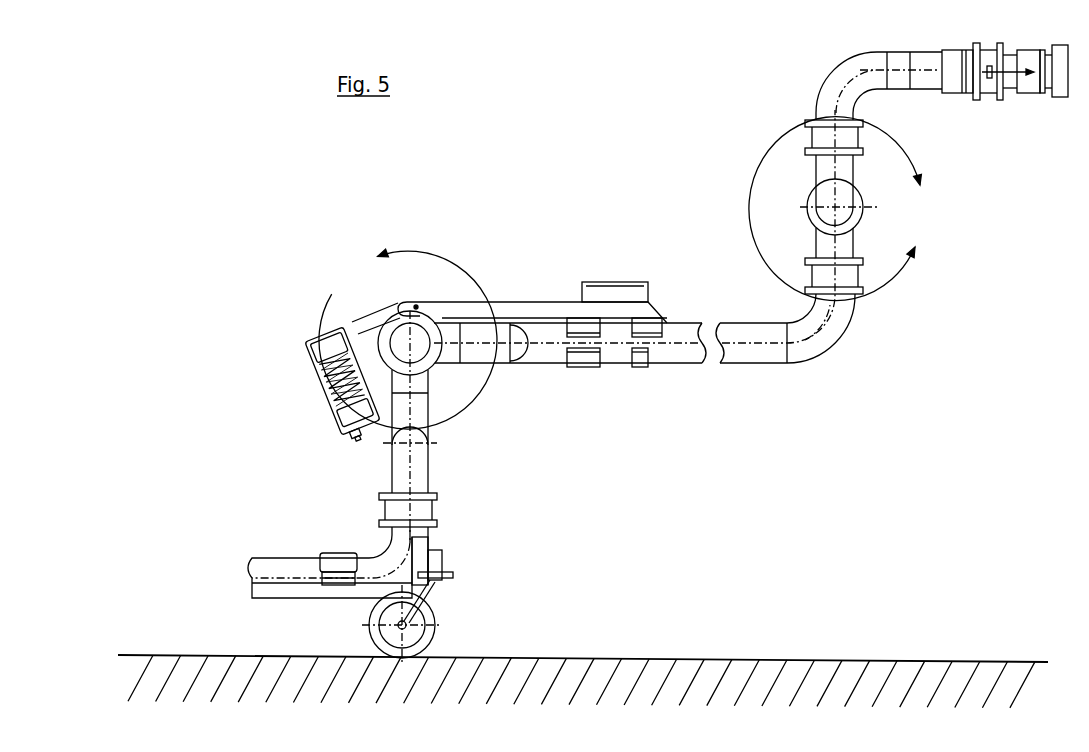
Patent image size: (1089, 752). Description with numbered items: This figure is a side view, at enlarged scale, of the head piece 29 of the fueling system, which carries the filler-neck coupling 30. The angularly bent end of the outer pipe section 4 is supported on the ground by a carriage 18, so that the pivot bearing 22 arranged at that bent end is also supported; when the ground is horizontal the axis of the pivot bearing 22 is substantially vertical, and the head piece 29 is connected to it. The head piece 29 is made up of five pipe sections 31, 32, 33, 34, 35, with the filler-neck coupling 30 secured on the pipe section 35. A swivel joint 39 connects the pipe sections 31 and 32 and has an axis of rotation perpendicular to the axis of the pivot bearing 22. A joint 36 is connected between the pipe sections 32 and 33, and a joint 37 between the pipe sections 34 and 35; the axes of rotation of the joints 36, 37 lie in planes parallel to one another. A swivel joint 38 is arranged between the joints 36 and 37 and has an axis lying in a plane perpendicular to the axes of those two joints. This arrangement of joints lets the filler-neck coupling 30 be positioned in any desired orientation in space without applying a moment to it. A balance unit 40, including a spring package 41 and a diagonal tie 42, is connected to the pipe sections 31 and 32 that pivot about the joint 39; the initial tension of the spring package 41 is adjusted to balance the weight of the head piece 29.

The outer pipe section 4 is at (282, 567).
The carriage 18 is at (428, 637).
The pivot bearing 22 is at (393, 512).
The head piece 29 is at (748, 365).
The filler-neck coupling 30 is at (987, 90).
The pipe section 31 is at (417, 478).
The pipe section 32 is at (516, 352).
The pipe section 33 is at (848, 248).
The pipe section 34 is at (842, 185).
The pipe section 35 is at (838, 67).
The joint 36 is at (820, 283).
The joint 37 is at (822, 138).
The swivel joint 38 is at (807, 213).
The swivel joint 39 is at (337, 292).
The balance unit 40 is at (281, 346).
The spring package 41 is at (325, 393).
The diagonal tie 42 is at (562, 310).